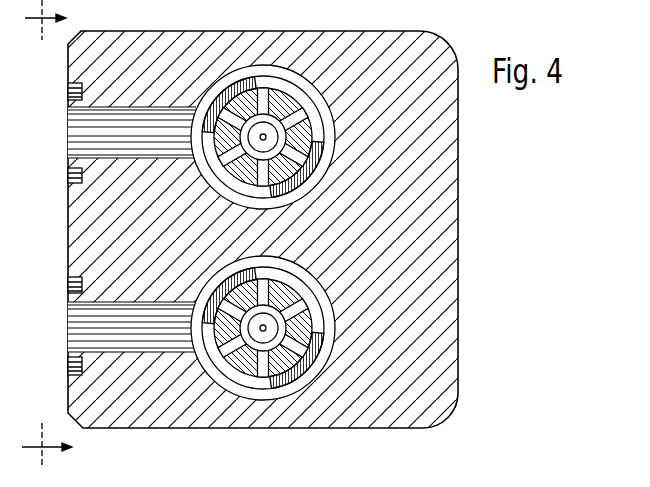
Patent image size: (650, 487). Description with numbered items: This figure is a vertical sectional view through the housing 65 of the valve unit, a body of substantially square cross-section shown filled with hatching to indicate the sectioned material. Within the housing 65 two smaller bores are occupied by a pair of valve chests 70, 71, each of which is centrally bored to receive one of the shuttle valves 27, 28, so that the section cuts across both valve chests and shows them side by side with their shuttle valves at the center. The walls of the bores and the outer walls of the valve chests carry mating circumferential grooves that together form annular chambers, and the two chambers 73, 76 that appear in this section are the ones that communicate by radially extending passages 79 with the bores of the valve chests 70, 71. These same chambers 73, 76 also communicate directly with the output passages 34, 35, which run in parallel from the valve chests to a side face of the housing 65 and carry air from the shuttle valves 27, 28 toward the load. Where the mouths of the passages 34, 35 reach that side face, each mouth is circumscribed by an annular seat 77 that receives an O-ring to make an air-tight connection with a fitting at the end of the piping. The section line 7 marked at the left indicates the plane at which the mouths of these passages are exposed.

The section line 7— 7 is at (47, 237).
The shuttle valve 27 is at (295, 137).
The shuttle valve 28 is at (292, 328).
The output passage 34 is at (93, 137).
The output passage 35 is at (97, 326).
The housing 65 is at (432, 231).
The valve chest 70 is at (290, 90).
The valve chest 71 is at (247, 372).
The annular chamber 73 is at (263, 110).
The annular chamber 76 is at (263, 365).
The annular seat 77 is at (68, 176).
The radially extending passage 79 is at (263, 353).